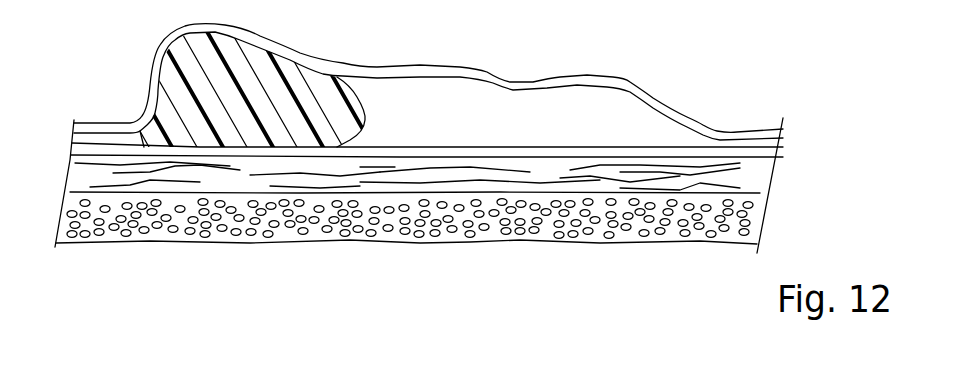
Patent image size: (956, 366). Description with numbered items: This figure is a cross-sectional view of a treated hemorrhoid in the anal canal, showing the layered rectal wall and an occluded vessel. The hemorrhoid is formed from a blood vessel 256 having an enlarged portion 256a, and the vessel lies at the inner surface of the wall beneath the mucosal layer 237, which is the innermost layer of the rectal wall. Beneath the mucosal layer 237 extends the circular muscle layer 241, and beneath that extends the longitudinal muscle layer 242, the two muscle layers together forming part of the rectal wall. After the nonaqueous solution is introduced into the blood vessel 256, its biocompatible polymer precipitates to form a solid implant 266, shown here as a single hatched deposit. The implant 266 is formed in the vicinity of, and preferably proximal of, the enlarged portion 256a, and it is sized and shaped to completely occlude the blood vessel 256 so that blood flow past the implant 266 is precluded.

The blood vessel 256 is at (91, 128).
The enlarged portion 256a is at (503, 73).
The mucosal layer 237 is at (110, 123).
The solid implant 266 is at (293, 78).
The circular muscle layer 241 is at (713, 168).
The longitudinal muscle layer 242 is at (698, 226).